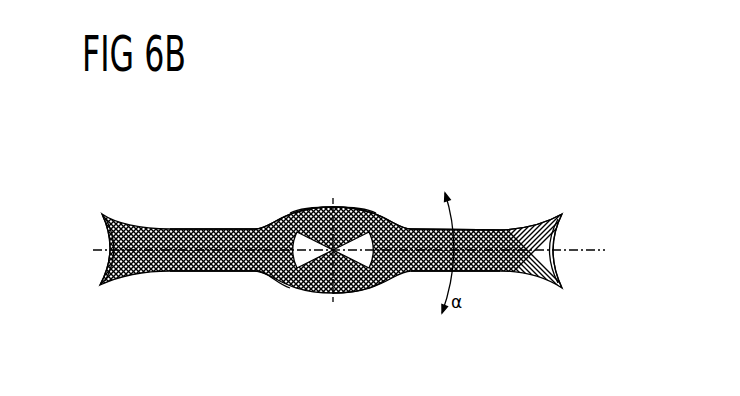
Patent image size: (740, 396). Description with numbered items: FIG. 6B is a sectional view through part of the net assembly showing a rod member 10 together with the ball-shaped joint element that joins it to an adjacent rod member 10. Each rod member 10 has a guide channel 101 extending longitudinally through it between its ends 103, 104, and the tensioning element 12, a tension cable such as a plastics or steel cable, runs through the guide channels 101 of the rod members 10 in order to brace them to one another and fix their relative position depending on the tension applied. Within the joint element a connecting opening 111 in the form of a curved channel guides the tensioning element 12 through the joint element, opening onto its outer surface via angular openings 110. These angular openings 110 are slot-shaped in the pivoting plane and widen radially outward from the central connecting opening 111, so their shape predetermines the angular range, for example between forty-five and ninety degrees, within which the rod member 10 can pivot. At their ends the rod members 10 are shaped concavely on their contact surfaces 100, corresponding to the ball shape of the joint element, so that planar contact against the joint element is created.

The rod member 10 is at (207, 263).
The tensioning element 12 is at (607, 248).
The contact surface 100 is at (105, 262).
The guide channel 101 is at (167, 270).
The end of rod member 103 is at (110, 273).
The end of rod member 104 is at (287, 277).
The angular opening 110 is at (292, 212).
The connecting opening 111 is at (328, 295).